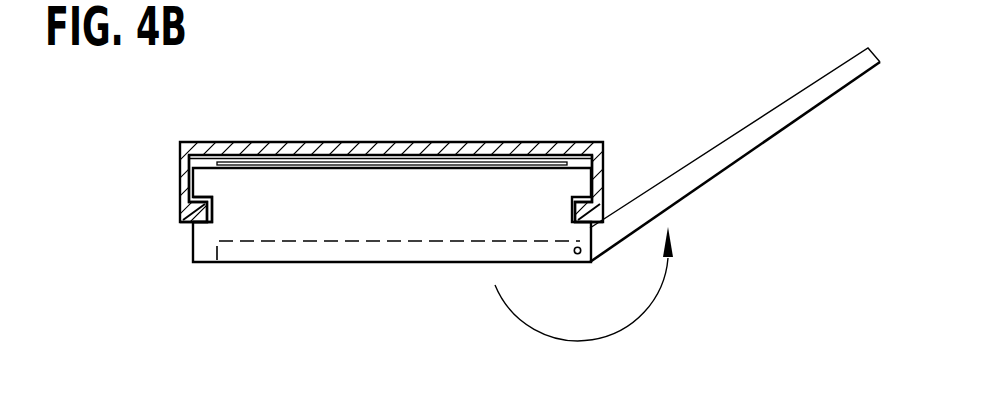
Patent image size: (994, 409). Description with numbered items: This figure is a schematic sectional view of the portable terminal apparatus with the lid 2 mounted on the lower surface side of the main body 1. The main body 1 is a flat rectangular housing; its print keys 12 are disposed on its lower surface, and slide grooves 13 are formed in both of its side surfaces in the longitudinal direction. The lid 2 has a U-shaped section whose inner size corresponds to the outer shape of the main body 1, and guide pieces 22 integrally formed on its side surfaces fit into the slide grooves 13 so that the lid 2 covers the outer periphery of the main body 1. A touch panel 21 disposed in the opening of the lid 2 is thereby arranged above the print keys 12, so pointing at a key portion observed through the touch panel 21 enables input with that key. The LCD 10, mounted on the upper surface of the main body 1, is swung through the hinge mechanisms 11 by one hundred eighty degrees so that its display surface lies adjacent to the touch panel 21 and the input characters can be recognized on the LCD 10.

The main body 1 is at (283, 260).
The lid 2 is at (255, 143).
The LCD 10 is at (720, 157).
The hinge mechanisms 11 is at (577, 254).
The print keys 12 is at (340, 162).
The slide grooves 13 is at (192, 227).
The touch panel 21 is at (458, 148).
The guide pieces 22 is at (198, 213).